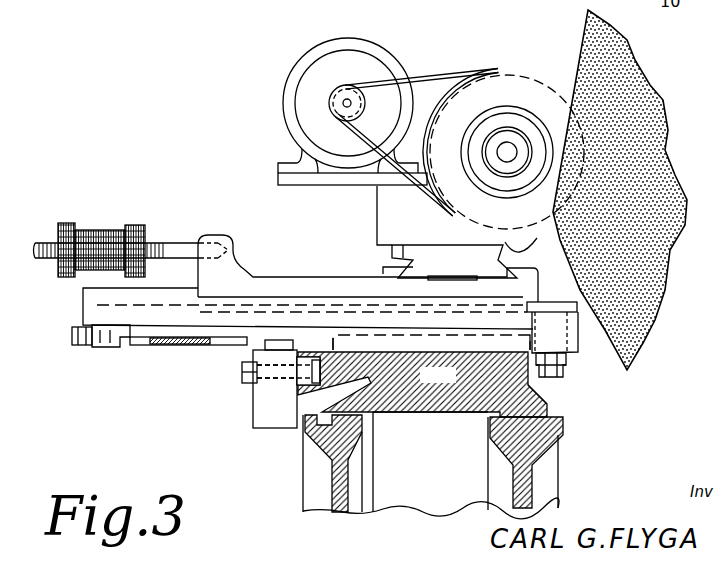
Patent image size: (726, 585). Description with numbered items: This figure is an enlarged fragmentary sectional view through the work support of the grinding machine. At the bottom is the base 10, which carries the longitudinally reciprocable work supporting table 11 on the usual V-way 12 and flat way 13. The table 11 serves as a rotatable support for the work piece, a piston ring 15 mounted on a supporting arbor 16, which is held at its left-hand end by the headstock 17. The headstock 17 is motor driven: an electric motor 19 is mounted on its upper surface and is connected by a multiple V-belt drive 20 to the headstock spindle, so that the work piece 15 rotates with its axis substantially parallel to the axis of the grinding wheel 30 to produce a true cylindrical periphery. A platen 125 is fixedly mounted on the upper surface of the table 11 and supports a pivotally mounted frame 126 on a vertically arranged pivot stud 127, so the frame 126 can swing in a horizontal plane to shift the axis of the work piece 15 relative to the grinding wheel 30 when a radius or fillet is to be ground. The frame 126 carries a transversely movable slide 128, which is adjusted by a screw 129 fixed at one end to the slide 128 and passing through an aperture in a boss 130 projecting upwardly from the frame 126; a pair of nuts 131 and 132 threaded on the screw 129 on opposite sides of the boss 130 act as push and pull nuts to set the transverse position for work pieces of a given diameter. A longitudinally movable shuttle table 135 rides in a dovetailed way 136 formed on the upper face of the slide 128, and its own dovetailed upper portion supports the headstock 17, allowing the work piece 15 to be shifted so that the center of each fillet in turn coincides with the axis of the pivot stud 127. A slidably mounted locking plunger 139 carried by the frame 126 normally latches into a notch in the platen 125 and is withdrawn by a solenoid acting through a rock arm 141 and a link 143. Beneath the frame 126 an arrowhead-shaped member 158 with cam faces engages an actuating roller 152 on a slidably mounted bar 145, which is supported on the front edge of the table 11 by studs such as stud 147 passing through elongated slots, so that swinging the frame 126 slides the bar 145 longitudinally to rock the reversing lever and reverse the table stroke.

The base 10 is at (336, 512).
The work supporting table 11 is at (548, 406).
The V-way 12 is at (547, 444).
The flat way 13 is at (303, 436).
The piston ring 15 is at (531, 110).
The supporting arbor 16 is at (507, 135).
The headstock 17 is at (377, 213).
The electric motor 19 is at (312, 70).
The multiple V-belt drive 20 is at (452, 74).
The grinding wheel 30 is at (586, 30).
The platen 125 is at (444, 340).
The pivotally mounted frame 126 is at (312, 320).
The pivot stud 127 is at (570, 345).
The transversely movable slide 128 is at (262, 280).
The screw 129 is at (165, 243).
The boss 130 is at (97, 232).
The nut 131 is at (62, 228).
The nut 132 is at (133, 228).
The shuttle table 135 is at (413, 251).
The dovetailed way 136 is at (383, 267).
The locking plunger 139 is at (163, 340).
The rock arm 141 is at (72, 326).
The link 143 is at (97, 340).
The slidably mounted bar 145 is at (258, 408).
The stud 147 is at (244, 373).
The actuating roller 152 is at (263, 348).
The arrowhead-shaped member 158 is at (180, 355).